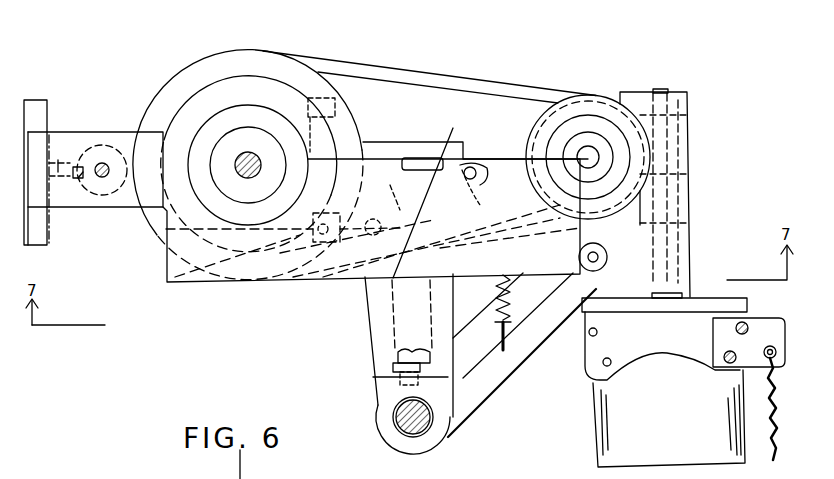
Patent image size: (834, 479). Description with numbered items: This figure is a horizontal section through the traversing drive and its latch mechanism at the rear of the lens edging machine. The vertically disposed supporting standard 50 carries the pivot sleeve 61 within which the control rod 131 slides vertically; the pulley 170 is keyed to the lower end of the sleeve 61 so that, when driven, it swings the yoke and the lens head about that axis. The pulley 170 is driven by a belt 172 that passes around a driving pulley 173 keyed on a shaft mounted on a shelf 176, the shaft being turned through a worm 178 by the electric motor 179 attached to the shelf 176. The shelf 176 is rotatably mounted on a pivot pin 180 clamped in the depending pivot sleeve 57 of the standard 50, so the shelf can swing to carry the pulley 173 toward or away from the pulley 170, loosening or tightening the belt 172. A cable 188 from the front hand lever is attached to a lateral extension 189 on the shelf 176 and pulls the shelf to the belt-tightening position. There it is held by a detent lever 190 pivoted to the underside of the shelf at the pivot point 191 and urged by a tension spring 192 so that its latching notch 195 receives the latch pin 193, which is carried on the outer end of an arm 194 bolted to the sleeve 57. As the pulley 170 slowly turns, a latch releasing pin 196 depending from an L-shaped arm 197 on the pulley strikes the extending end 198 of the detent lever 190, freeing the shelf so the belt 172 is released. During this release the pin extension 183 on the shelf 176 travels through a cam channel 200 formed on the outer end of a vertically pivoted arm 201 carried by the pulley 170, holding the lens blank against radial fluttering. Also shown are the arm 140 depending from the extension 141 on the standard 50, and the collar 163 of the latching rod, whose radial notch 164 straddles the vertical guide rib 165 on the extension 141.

The supporting standard 50 is at (172, 276).
The pivot sleeve 57 is at (437, 432).
The pivot sleeve 61 is at (255, 150).
The control rod 131 is at (248, 152).
The arm 140 is at (35, 110).
The extension 141 is at (73, 150).
The collar 163 is at (108, 153).
The radial notch 164 is at (78, 178).
The vertical guide rib 165 is at (58, 172).
The pulley 170 is at (195, 73).
The belt 172 is at (402, 74).
The driving pulley 173 is at (576, 100).
The shelf 176 is at (530, 350).
The worm 178 is at (677, 143).
The electric motor 179 is at (688, 320).
The pivot pin 180 is at (392, 417).
The pin extension 183 is at (478, 205).
The cable 188 is at (776, 396).
The lateral extension 189 is at (770, 323).
The detent lever 190 is at (466, 155).
The pivot point 191 is at (598, 258).
The tension spring 192 is at (497, 293).
The latch pin 193 is at (408, 266).
The arm 194 is at (405, 313).
The latching notch 195 is at (431, 194).
The latch releasing pin 196 is at (373, 235).
The L-shaped arm 197 is at (350, 223).
The extending end 198 is at (395, 203).
The cam channel 200 is at (413, 160).
The arm 201 is at (352, 150).